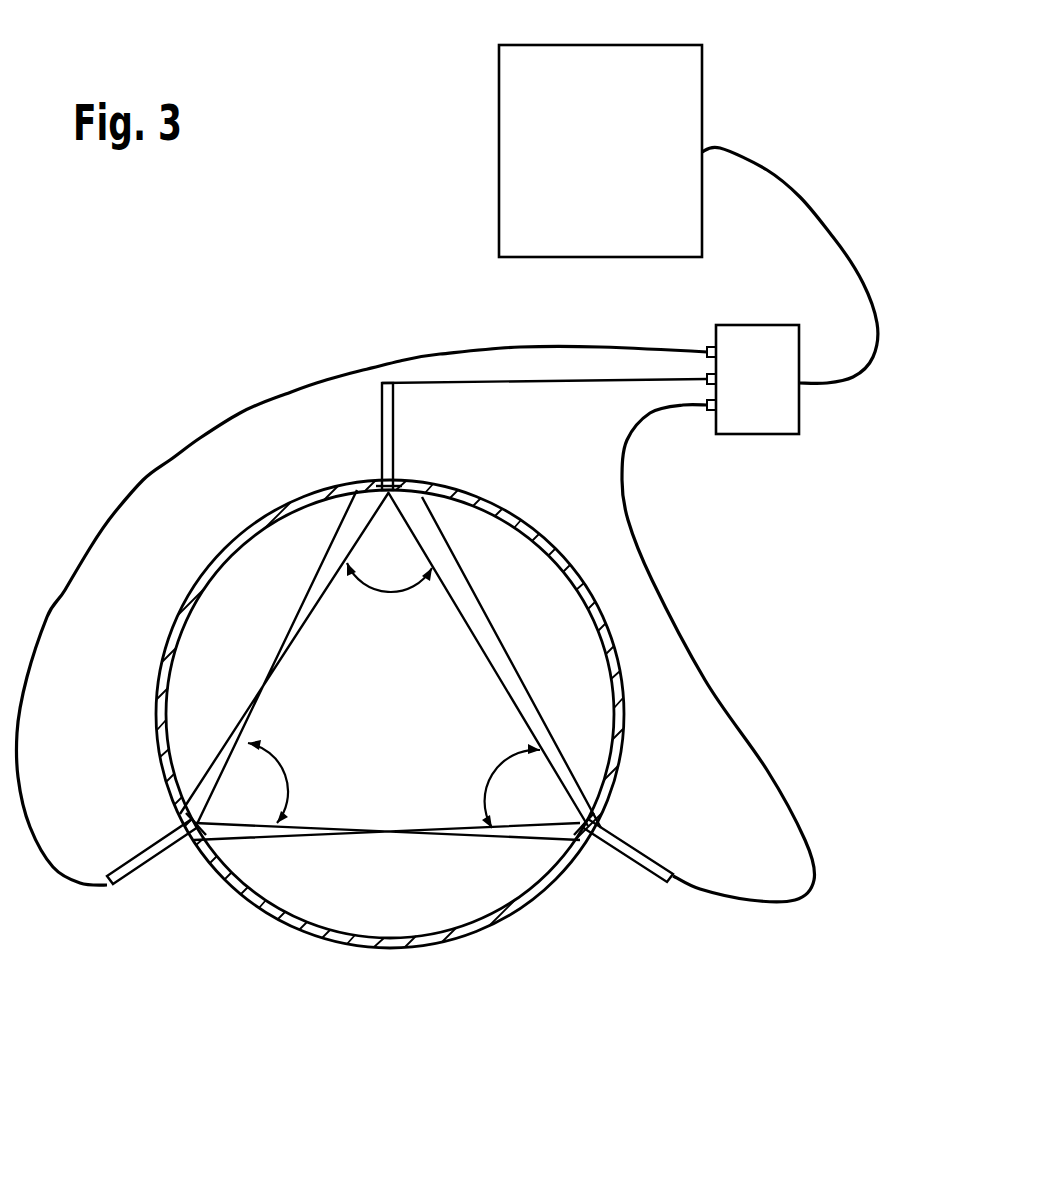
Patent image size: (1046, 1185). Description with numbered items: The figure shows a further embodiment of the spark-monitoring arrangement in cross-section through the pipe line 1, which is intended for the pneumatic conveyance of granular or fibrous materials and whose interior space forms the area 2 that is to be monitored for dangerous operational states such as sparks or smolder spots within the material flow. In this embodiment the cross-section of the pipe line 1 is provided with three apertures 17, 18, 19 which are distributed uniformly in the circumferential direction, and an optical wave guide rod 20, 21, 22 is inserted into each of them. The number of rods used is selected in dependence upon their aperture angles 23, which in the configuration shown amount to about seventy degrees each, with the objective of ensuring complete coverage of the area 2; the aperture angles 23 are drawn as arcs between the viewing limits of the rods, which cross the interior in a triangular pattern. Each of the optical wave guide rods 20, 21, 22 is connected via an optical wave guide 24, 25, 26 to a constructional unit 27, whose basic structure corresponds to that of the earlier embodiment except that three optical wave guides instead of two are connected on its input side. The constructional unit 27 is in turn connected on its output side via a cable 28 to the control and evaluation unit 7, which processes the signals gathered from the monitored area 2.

The pipe line 1 is at (262, 522).
The area 2 is at (525, 588).
The control and evaluation unit 7 is at (655, 122).
The aperture 17 is at (197, 838).
The aperture 18 is at (385, 490).
The aperture 19 is at (586, 840).
The optical wave guide rod 20 is at (155, 868).
The optical wave guide rod 21 is at (389, 437).
The optical wave guide rod 22 is at (636, 857).
The aperture angle 23 is at (490, 773).
The optical wave guide 24 is at (152, 478).
The optical wave guide 25 is at (530, 381).
The optical wave guide 26 is at (630, 492).
The constructional unit 27 is at (777, 412).
The cable 28 is at (800, 192).